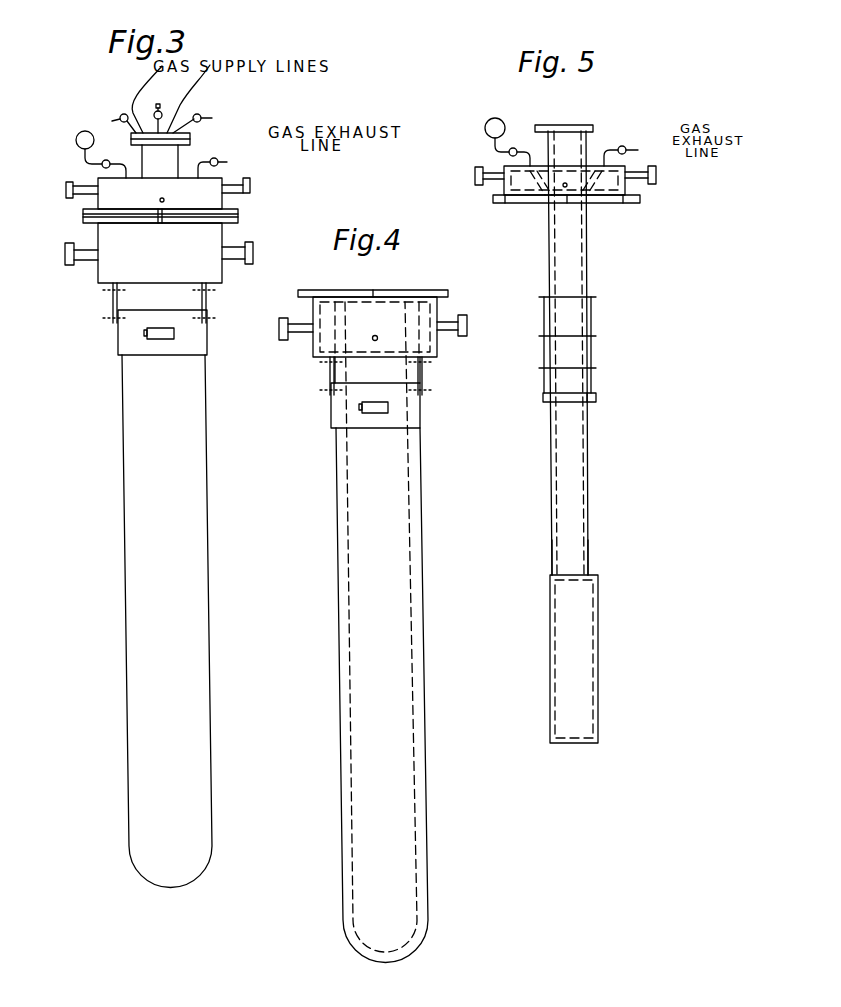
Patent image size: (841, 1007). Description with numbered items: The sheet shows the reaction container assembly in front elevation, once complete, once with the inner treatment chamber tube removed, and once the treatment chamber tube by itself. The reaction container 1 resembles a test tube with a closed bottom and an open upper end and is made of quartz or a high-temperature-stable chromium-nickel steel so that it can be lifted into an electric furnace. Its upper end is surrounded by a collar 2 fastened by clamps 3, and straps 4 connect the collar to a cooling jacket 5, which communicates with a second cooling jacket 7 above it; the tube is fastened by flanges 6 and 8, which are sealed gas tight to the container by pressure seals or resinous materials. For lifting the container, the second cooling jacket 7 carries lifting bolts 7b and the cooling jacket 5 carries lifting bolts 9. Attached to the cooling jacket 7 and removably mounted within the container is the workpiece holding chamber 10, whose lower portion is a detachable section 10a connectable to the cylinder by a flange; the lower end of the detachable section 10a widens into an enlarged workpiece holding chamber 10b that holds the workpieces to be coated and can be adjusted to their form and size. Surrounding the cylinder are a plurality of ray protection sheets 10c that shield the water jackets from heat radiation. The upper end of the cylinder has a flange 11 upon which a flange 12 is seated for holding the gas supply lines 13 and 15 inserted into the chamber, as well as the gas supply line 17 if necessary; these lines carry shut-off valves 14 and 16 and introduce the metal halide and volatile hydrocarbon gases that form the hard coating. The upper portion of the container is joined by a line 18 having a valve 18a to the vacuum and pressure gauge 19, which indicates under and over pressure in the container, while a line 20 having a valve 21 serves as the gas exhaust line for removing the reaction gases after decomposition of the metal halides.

In FIG. 3, the reaction container 1 is at (203, 543).
In FIG. 4, the reaction container 1 is at (408, 600).
In FIG. 3, the collar 2 is at (207, 345).
In FIG. 4, the collar 2 is at (420, 417).
In FIG. 3, the clamps 3 is at (174, 333).
In FIG. 4, the clamps 3 is at (392, 397).
In FIG. 3, the straps 4 is at (206, 305).
In FIG. 4, the straps 4 is at (330, 378).
In FIG. 3, the cooling jacket 5 is at (222, 278).
In FIG. 4, the cooling jacket 5 is at (375, 327).
In FIG. 3, the flange 6 is at (238, 219).
In FIG. 4, the flange 6 is at (298, 293).
In FIG. 3, the second cooling jacket 7 is at (160, 193).
In FIG. 5, the second cooling jacket 7 is at (564, 181).
In FIG. 3, the lifting bolts 7b is at (66, 190).
In FIG. 5, the lifting bolts 7b is at (475, 177).
In FIG. 3, the flange 8 is at (238, 213).
In FIG. 5, the flange 8 is at (495, 203).
In FIG. 3, the lifting bolts 9 is at (65, 252).
In FIG. 4, the lifting bolts 9 is at (279, 331).
In FIG. 5, the workpiece holding chamber 10 is at (575, 267).
In FIG. 5, the detachable section 10a is at (585, 535).
In FIG. 5, the enlarged workpiece holding chamber 10b is at (653, 668).
In FIG. 5, the ray protection sheets 10c is at (523, 378).
In FIG. 3, the flange 11 is at (180, 159).
In FIG. 5, the flange 11 is at (591, 125).
In FIG. 3, the flange 12 is at (190, 138).
In FIG. 3, the gas supply line 13 is at (112, 121).
In FIG. 3, the shut-off valve 14 is at (124, 114).
In FIG. 3, the gas supply line 15 is at (221, 117).
In FIG. 3, the shut-off valve 16 is at (200, 114).
In FIG. 3, the gas supply line 17 is at (160, 108).
In FIG. 3, the line 18 is at (85, 158).
In FIG. 5, the line 18 is at (493, 146).
In FIG. 3, the valve 18a is at (118, 151).
In FIG. 3, the vacuum and pressure gauge 19 is at (76, 140).
In FIG. 5, the vacuum and pressure gauge 19 is at (485, 128).
In FIG. 3, the gas exhaust line 20 is at (229, 162).
In FIG. 5, the gas exhaust line 20 is at (608, 148).
In FIG. 3, the valve 21 is at (220, 160).
In FIG. 5, the valve 21 is at (638, 148).